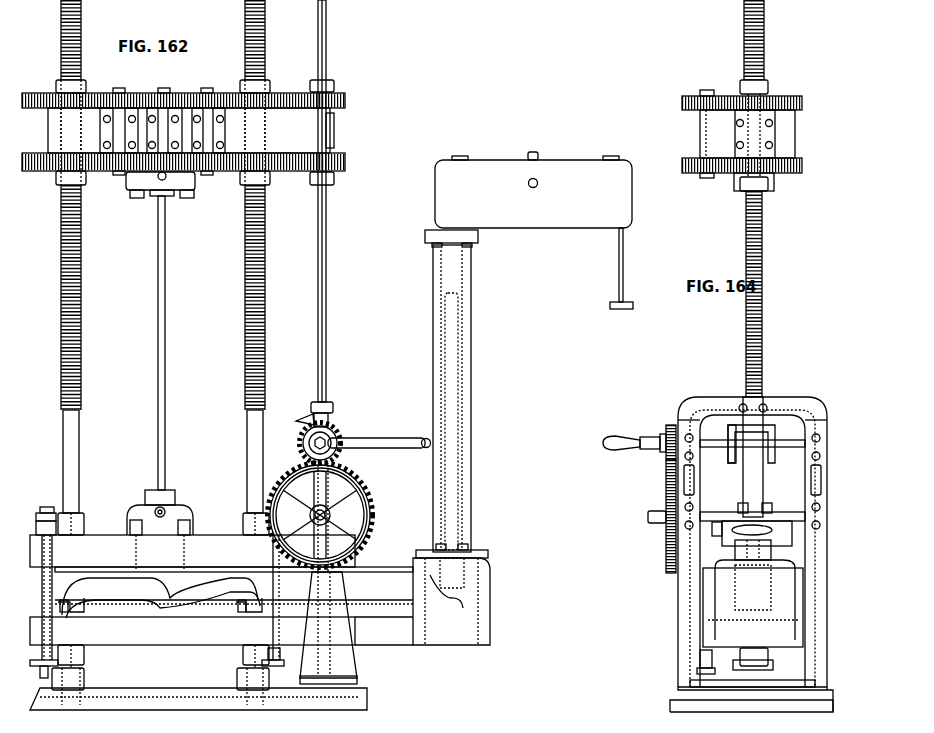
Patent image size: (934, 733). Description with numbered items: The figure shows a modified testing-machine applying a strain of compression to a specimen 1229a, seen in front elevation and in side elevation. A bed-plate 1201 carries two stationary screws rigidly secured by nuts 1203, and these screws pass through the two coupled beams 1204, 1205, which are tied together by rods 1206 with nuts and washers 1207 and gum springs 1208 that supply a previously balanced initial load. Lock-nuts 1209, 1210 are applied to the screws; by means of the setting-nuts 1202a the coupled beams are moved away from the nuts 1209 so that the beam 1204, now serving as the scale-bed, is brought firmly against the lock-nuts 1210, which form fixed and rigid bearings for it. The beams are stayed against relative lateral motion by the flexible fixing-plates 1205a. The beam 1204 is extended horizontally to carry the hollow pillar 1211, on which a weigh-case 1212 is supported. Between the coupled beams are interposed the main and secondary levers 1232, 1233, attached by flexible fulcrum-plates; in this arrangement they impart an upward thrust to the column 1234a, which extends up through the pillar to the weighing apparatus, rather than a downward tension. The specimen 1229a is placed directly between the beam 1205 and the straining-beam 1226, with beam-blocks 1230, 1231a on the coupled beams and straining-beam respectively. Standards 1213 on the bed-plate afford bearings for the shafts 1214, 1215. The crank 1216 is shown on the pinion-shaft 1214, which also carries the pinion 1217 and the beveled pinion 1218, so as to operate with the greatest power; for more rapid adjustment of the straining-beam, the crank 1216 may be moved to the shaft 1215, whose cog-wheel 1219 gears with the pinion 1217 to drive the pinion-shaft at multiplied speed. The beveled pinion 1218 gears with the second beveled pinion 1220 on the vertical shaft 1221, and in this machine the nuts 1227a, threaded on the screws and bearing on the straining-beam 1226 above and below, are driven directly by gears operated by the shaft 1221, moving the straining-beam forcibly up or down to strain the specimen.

In FIG. 162, the bed-plate 1201 is at (198, 699).
In FIG. 164, the bed-plate 1201 is at (751, 699).
In FIG. 162, the setting-nuts 1202a is at (161, 611).
In FIG. 162, the nuts 1203 is at (160, 686).
In FIG. 162, the beam 1204 is at (244, 631).
In FIG. 164, the beam 1204 is at (753, 603).
In FIG. 162, the beam 1205 is at (221, 553).
In FIG. 164, the beam 1205 is at (762, 536).
In FIG. 162, the fixing-plate 1205a is at (426, 598).
In FIG. 162, the rods 1206 is at (161, 597).
In FIG. 162, the nuts and washers 1207 is at (162, 592).
In FIG. 164, the nuts and washers 1207 is at (714, 668).
In FIG. 162, the springs 1208 is at (158, 583).
In FIG. 164, the springs 1208 is at (713, 595).
In FIG. 162, the lock-nuts 1209 is at (163, 524).
In FIG. 162, the lock-nuts 1210 is at (163, 656).
In FIG. 164, the lock-nuts 1210 is at (764, 659).
In FIG. 162, the hollow pillar 1211 is at (452, 394).
In FIG. 164, the hollow pillar 1211 is at (753, 549).
In FIG. 162, the weigh-case 1212 is at (534, 230).
In FIG. 162, the standards 1213 is at (328, 628).
In FIG. 164, the standards 1213 is at (752, 542).
In FIG. 164, the pinion-shaft 1214 is at (752, 445).
In FIG. 164, the shaft 1215 is at (752, 516).
In FIG. 162, the crank 1216 is at (379, 444).
In FIG. 164, the crank 1216 is at (634, 438).
In FIG. 162, the pinion 1217 is at (301, 445).
In FIG. 164, the pinion 1217 is at (665, 435).
In FIG. 162, the beveled pinion 1218 is at (307, 443).
In FIG. 164, the beveled pinion 1218 is at (720, 446).
In FIG. 162, the cog-wheel 1219 is at (329, 518).
In FIG. 164, the cog-wheel 1219 is at (658, 516).
In FIG. 162, the beveled pinion 1220 is at (334, 418).
In FIG. 164, the beveled pinion 1220 is at (763, 457).
In FIG. 164, the vertical shaft 1221 is at (759, 198).
In FIG. 162, the straining-beam 1226 is at (183, 131).
In FIG. 164, the straining-beam 1226 is at (742, 134).
In FIG. 162, the nuts 1227a is at (177, 256).
In FIG. 164, the nuts 1227a is at (769, 85).
In FIG. 162, the specimen 1229a is at (149, 343).
In FIG. 162, the beam-block 1230 is at (160, 530).
In FIG. 164, the beam-block 1230 is at (764, 505).
In FIG. 162, the beam-block 1231a is at (160, 185).
In FIG. 164, the beam-block 1231a is at (767, 182).
In FIG. 162, the main lever 1232 is at (234, 614).
In FIG. 164, the main lever 1232 is at (753, 590).
In FIG. 162, the secondary lever 1233 is at (262, 596).
In FIG. 162, the column 1234a is at (459, 421).